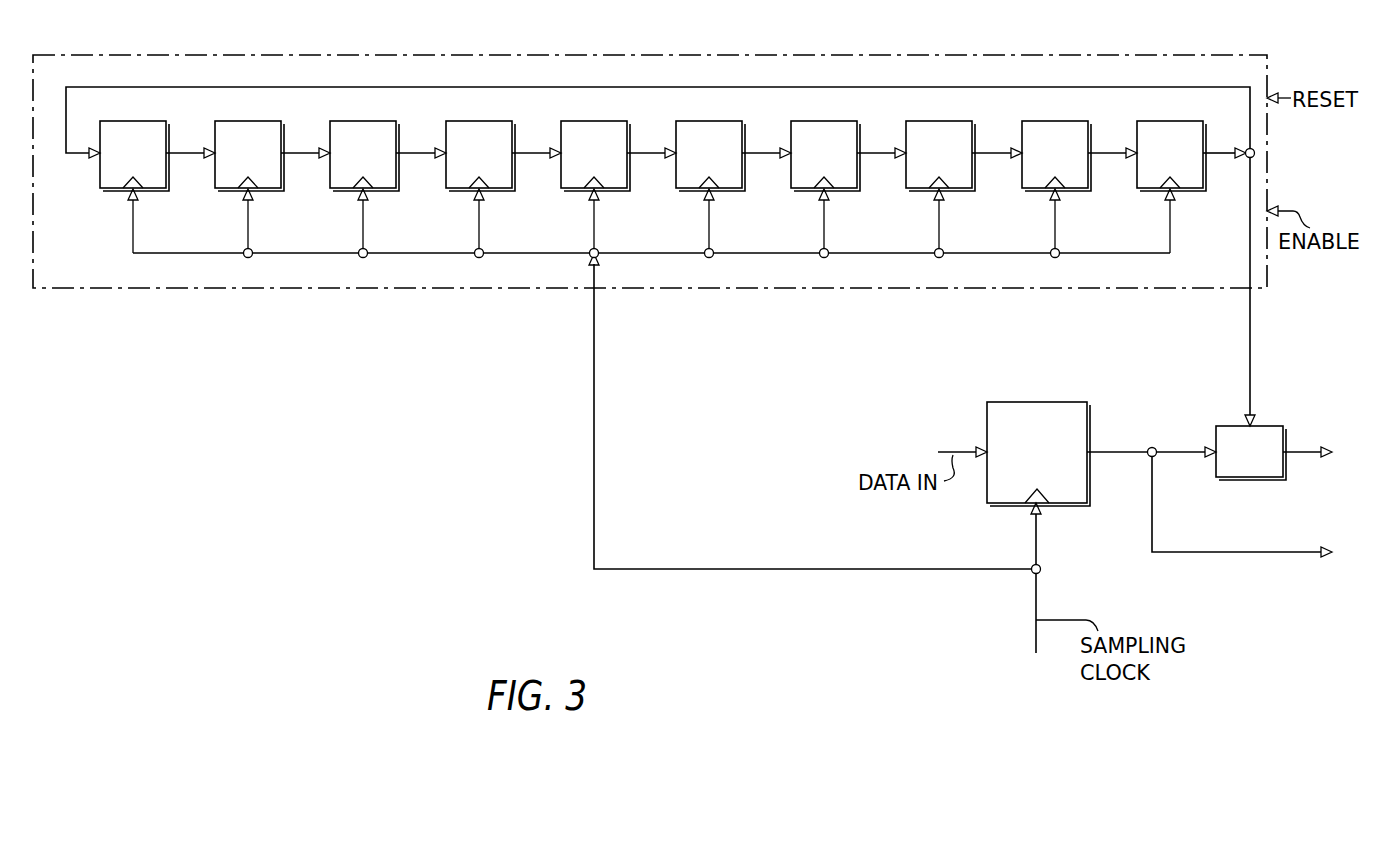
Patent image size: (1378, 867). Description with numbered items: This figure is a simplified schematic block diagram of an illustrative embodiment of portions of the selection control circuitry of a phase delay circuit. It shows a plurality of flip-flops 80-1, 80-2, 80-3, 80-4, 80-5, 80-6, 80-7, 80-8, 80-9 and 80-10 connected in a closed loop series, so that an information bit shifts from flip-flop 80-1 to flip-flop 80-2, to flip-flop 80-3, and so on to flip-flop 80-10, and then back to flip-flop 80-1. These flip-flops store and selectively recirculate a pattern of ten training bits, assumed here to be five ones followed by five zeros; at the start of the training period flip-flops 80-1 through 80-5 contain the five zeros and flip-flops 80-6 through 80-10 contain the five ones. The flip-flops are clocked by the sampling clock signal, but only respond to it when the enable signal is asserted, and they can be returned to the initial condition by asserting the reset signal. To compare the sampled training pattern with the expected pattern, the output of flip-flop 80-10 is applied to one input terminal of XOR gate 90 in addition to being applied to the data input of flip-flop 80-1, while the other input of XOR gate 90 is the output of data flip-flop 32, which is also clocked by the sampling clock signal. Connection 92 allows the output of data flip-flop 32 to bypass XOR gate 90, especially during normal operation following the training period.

The flip-flop 80-1 is at (130, 120).
The flip-flop 80-2 is at (234, 120).
The flip-flop 80-3 is at (343, 120).
The flip-flop 80-4 is at (457, 120).
The flip-flop 80-5 is at (573, 120).
The flip-flop 80-6 is at (688, 120).
The flip-flop 80-7 is at (805, 120).
The flip-flop 80-8 is at (921, 120).
The flip-flop 80-9 is at (1035, 120).
The flip-flop 80-10 is at (1158, 120).
The data flip-flop 32 is at (1048, 402).
The XOR gate 90 is at (1287, 435).
The connection 92 is at (1235, 553).